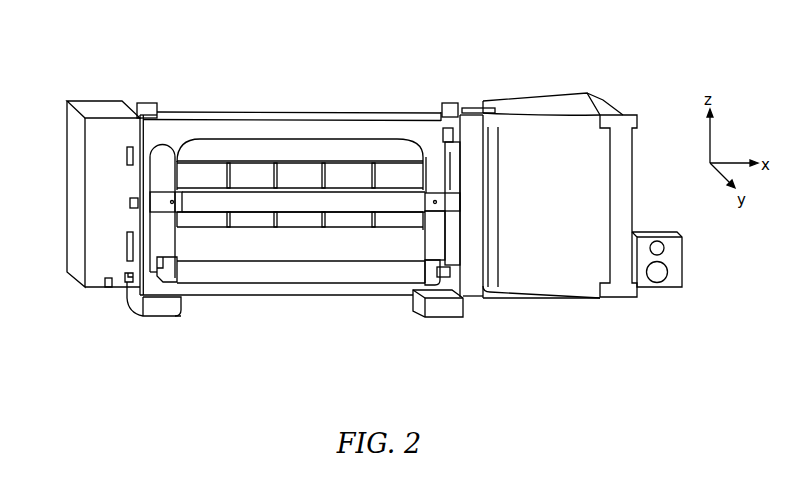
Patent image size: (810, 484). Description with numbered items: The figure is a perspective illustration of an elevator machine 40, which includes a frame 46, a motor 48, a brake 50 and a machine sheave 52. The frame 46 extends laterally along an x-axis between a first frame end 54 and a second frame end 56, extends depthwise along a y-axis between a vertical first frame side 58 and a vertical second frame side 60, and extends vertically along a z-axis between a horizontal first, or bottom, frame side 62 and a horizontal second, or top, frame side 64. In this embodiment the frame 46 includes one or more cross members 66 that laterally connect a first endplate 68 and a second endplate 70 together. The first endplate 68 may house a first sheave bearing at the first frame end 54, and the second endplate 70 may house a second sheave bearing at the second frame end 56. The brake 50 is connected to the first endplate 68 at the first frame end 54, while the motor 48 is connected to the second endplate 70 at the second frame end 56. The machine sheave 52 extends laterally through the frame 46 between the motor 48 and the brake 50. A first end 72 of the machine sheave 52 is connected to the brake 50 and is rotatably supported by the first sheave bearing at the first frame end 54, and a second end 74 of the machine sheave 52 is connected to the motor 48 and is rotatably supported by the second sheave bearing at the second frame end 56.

The machine 40 is at (72, 80).
The frame 46 is at (173, 110).
The motor 48 is at (543, 100).
The brake 50 is at (88, 284).
The machine sheave 52 is at (248, 162).
The first frame end 54 is at (135, 314).
The second frame end 56 is at (487, 292).
The first frame side 58 is at (125, 298).
The second frame side 60 is at (166, 306).
The first frame side 62 is at (438, 318).
The second frame side 64 is at (450, 103).
The cross members 66 is at (340, 112).
The first endplate 68 is at (143, 102).
The second endplate 70 is at (470, 108).
The first end 72 is at (177, 227).
The second end 74 is at (425, 230).